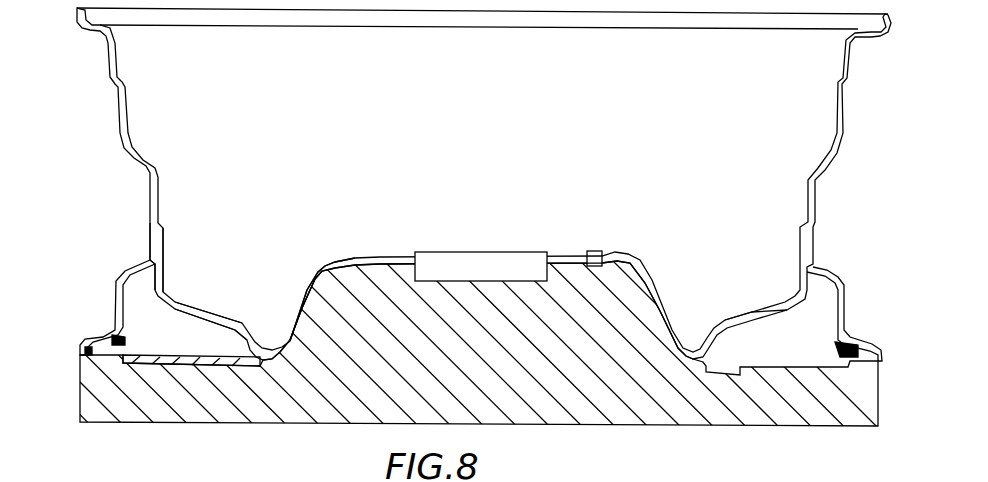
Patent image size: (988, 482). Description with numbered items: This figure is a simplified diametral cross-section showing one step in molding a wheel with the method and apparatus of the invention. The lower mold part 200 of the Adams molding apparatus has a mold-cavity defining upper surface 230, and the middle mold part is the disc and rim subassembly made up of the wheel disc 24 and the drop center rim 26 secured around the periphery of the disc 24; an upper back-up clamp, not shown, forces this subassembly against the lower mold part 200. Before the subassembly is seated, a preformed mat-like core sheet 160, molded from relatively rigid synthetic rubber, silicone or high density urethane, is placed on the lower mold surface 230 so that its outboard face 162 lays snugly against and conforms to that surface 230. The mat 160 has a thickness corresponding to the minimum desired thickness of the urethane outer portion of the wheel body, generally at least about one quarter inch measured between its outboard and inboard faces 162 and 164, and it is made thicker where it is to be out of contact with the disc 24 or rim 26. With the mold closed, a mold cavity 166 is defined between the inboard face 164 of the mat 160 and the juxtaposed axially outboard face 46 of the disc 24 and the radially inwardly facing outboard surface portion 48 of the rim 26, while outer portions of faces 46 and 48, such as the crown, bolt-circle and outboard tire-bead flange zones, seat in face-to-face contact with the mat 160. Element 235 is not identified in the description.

The wheel disc 24 is at (316, 258).
The drop center rim 26 is at (106, 119).
The axially outboard face of disc 46 is at (150, 300).
The radially inwardly facing outboard surface portion of rim 48 is at (124, 303).
The preformed mat-like core sheet 160 is at (314, 335).
The outboard face of mat 162 is at (311, 306).
The inboard face of mat 164 is at (203, 333).
The mold cavity 166 is at (245, 336).
The lower mold part 200 is at (68, 406).
The mold-cavity defining upper surface of lower mold part 230 is at (180, 356).
The mold insert bar 235 is at (442, 252).